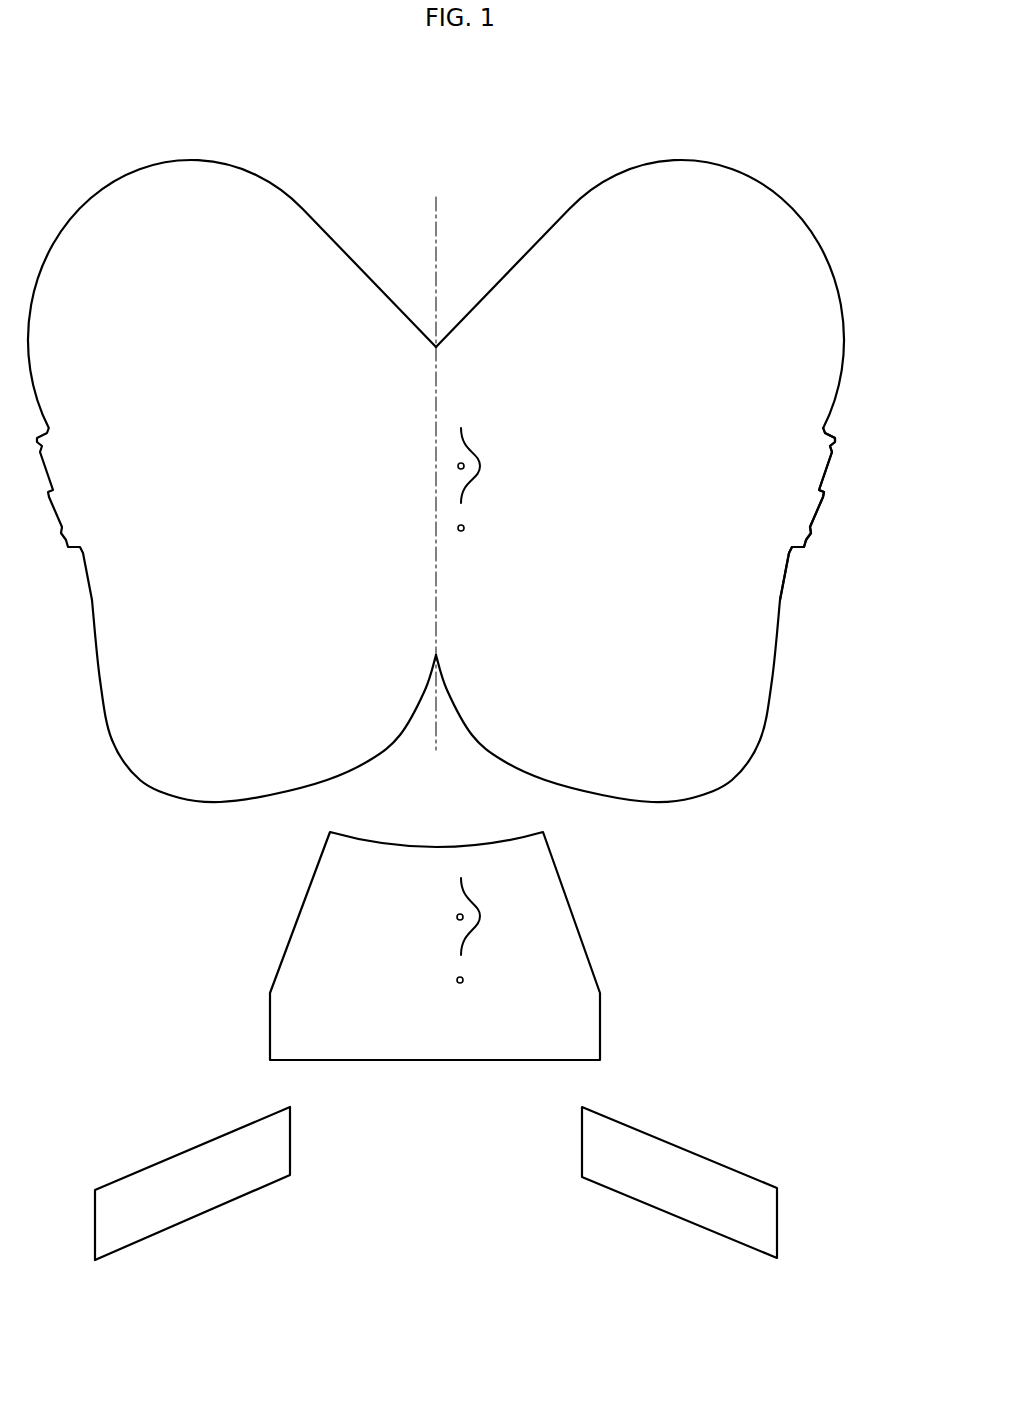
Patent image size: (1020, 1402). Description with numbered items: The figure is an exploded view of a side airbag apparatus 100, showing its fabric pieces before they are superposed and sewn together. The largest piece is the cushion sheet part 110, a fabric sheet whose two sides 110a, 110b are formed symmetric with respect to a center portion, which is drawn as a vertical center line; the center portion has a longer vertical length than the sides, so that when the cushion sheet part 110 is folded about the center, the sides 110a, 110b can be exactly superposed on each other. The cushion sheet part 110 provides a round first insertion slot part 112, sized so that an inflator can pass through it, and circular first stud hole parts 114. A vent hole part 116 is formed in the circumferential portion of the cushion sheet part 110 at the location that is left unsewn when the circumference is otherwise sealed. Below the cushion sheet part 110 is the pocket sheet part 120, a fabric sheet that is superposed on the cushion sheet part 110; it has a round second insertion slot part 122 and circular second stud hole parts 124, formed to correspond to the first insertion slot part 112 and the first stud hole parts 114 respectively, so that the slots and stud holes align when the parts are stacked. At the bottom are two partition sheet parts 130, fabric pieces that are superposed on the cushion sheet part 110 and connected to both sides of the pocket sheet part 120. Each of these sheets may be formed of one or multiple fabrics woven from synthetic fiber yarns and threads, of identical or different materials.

The side airbag apparatus 100 is at (832, 78).
The cushion sheet part 110 is at (300, 178).
The side of the cushion sheet part 110a is at (160, 197).
The side of the cushion sheet part 110b is at (700, 198).
The first insertion slot part 112 is at (470, 447).
The first stud hole parts 114 is at (466, 466).
The vent hole part 116 is at (817, 503).
The pocket sheet part 120 is at (593, 957).
The second insertion slot part 122 is at (478, 907).
The second stud hole parts 124 is at (467, 980).
The partition sheet parts 130 is at (208, 1127).